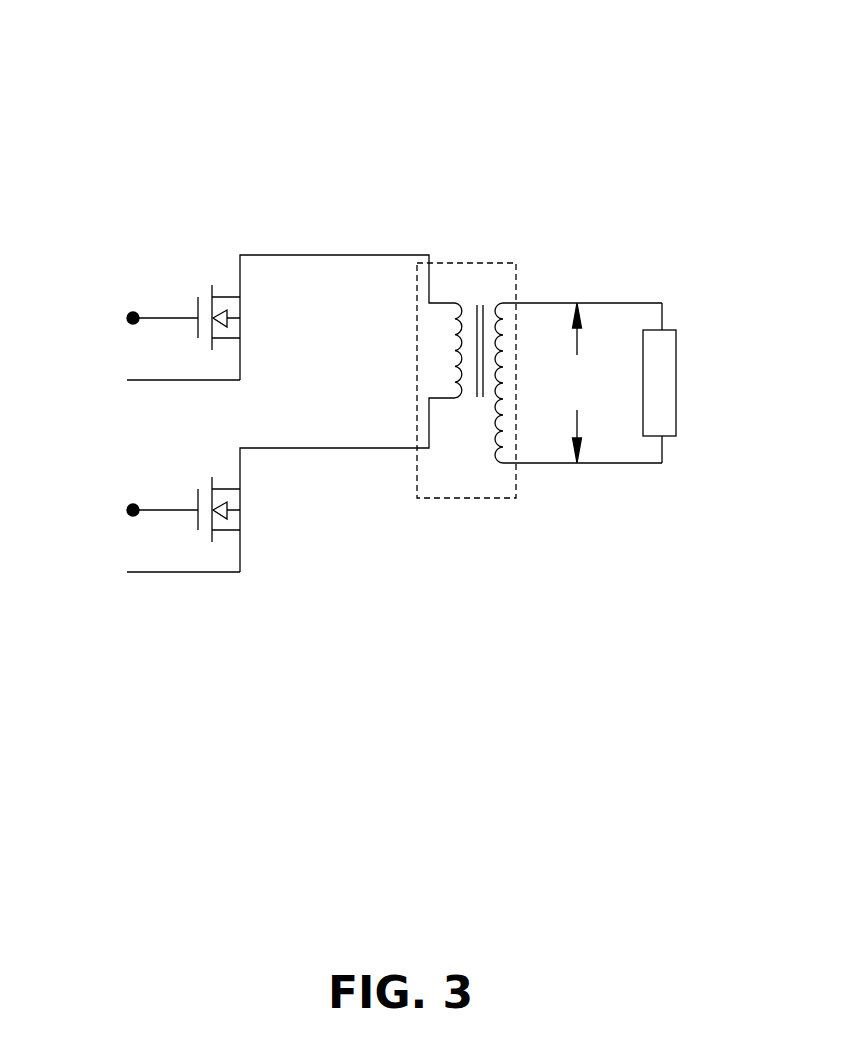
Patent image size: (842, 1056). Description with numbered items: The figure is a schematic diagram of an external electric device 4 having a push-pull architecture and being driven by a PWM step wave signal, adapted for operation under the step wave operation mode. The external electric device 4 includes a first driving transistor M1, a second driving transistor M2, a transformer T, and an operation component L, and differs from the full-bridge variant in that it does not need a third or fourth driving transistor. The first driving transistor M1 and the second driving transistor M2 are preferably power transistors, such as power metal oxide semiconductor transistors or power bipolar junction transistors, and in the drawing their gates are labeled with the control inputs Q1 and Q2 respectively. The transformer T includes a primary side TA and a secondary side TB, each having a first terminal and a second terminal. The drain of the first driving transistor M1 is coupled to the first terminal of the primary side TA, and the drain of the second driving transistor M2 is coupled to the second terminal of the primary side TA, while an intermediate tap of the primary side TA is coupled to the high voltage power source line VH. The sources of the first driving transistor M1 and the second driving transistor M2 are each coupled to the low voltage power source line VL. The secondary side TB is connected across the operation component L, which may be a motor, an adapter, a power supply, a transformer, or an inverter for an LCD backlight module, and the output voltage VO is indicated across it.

The external electric device 4 is at (697, 133).
The first driving transistor M1 is at (206, 297).
The second driving transistor M2 is at (206, 489).
The first gate control signal Q1 is at (137, 321).
The second gate control signal Q2 is at (137, 513).
The low voltage power source line VL is at (156, 474).
The high voltage power source line VH is at (453, 352).
The transformer T is at (467, 263).
The primary side TA is at (453, 407).
The secondary side TB is at (510, 422).
The output voltage VO is at (575, 383).
The operation component L is at (659, 383).